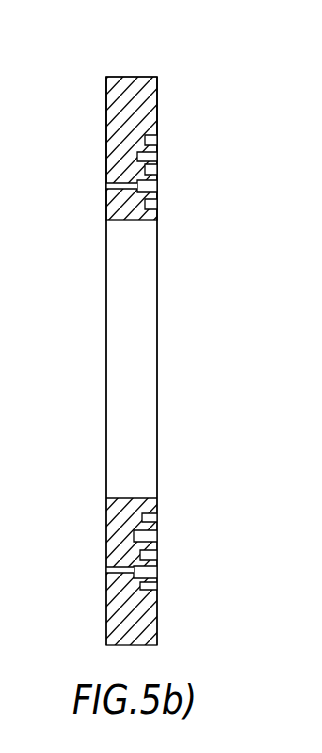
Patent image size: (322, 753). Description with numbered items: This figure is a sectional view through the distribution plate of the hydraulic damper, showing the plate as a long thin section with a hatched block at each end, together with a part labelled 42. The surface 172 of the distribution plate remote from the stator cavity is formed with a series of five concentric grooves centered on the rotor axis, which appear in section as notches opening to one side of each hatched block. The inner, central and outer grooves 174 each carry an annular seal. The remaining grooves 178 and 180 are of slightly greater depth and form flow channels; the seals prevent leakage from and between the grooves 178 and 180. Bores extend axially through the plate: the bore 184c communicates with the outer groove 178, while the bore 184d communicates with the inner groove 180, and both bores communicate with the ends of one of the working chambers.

The end block 42 is at (122, 77).
The surface of the distribution plate 172 is at (159, 277).
The inner, central and outer grooves 174 is at (160, 139).
The outer groove 178 is at (158, 156).
The inner groove 180 is at (158, 187).
The bore 184d is at (106, 187).
The bore 184c is at (106, 571).